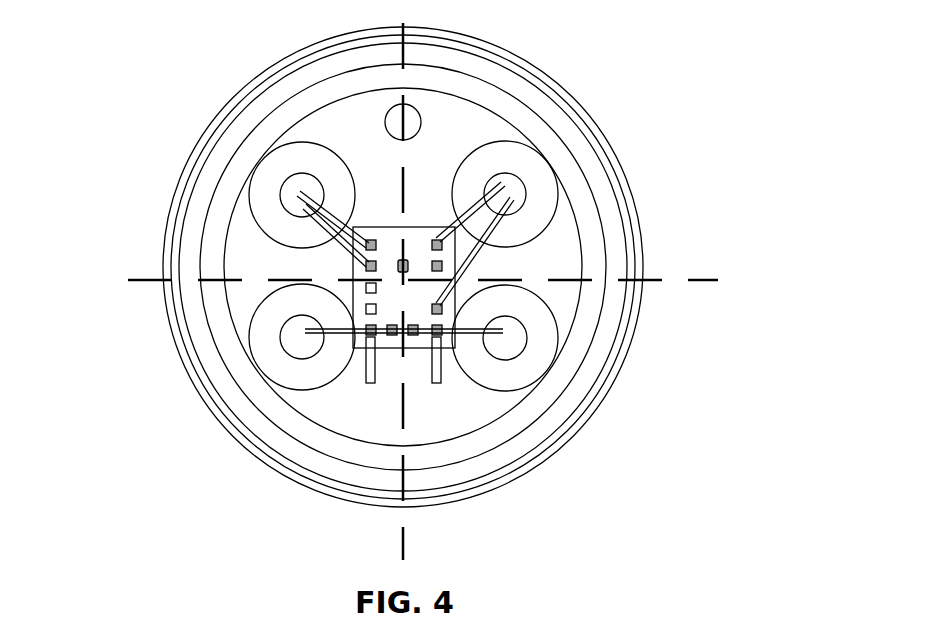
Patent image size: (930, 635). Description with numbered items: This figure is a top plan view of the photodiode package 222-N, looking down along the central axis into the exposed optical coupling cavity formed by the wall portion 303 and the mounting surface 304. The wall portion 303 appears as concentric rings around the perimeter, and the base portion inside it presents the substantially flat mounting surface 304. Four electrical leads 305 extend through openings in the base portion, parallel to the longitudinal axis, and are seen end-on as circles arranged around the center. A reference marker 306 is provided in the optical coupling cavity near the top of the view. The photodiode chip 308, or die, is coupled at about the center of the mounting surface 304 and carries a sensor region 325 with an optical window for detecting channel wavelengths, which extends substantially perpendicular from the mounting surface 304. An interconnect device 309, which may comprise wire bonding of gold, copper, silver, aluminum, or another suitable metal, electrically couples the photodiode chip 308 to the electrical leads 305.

The photodiode package 222-N is at (185, 92).
The wall portion 303 is at (176, 195).
The mounting surface 304 is at (341, 133).
The electrical leads 305 is at (294, 178).
The reference marker 306 is at (405, 107).
The photodiode chip 308 is at (402, 330).
The interconnect device 309 is at (310, 202).
The sensor region 325 is at (407, 257).